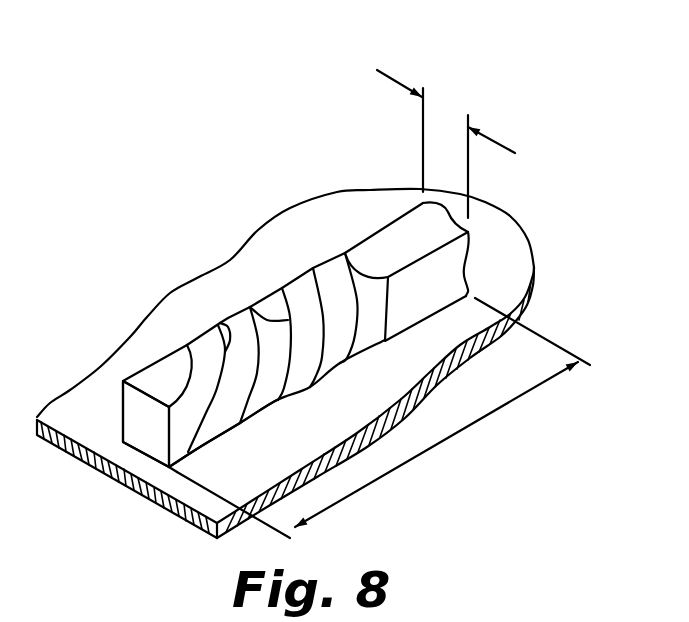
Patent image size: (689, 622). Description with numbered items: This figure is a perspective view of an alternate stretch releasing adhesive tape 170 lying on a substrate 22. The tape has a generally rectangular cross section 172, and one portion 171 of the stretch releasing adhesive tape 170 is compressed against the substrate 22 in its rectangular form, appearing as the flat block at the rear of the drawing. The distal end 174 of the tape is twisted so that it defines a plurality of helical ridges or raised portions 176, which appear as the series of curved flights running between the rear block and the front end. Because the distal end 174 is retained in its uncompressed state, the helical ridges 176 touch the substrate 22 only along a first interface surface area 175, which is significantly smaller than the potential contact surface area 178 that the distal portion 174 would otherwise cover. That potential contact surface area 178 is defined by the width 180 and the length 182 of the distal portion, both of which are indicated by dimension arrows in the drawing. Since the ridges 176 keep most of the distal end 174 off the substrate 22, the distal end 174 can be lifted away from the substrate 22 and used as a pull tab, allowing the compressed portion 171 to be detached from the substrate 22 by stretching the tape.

The substrate 22 is at (515, 238).
The stretch releasing adhesive tape 170 is at (307, 258).
The portion 171 is at (382, 240).
The rectangular cross section 172 is at (132, 418).
The distal end 174 is at (163, 355).
The first interface surface area 175 is at (238, 428).
The helical ridges 176 is at (248, 308).
The potential contact surface area 178 is at (147, 458).
The width 180 is at (390, 73).
The length 182 is at (433, 447).